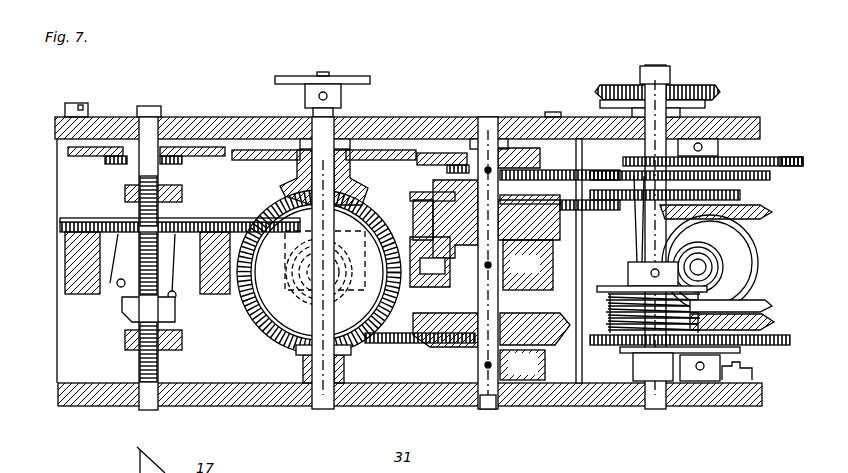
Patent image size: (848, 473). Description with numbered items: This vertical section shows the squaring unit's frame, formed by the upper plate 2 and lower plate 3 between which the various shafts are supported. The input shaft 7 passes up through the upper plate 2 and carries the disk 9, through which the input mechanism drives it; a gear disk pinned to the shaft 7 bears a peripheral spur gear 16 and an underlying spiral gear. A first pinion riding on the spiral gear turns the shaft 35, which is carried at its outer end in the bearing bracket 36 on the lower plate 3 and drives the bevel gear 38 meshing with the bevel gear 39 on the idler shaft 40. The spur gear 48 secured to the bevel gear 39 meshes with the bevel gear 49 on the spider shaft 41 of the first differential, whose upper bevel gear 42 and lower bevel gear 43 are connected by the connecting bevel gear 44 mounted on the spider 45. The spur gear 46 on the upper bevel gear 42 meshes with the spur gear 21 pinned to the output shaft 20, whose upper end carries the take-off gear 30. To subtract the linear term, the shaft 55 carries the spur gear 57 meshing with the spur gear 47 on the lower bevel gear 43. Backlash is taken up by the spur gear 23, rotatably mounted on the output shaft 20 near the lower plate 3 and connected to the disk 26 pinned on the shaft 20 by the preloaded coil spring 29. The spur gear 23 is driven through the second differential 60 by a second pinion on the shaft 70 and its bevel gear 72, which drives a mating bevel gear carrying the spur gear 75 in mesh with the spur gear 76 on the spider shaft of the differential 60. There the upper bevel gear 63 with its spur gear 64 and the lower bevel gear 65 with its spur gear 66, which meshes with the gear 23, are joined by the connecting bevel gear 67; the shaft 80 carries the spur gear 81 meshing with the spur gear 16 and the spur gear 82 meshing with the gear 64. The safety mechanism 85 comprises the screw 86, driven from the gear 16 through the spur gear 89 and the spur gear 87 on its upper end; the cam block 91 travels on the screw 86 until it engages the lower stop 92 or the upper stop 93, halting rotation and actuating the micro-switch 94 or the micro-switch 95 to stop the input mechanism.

The upper plate 2 is at (217, 118).
The lower plate 3 is at (60, 400).
The input shaft 7 is at (334, 110).
The disk 9 is at (360, 80).
The spur gear 16 is at (60, 228).
The output shaft 20 is at (664, 230).
The spur gear 21 is at (740, 196).
The spur gear 23 is at (735, 345).
The disk 26 is at (710, 289).
The coil spring 29 is at (720, 308).
The take-off gear 30 is at (712, 90).
The shaft 35 is at (300, 272).
The bearing bracket 36 is at (286, 374).
The bevel gear 38 is at (262, 340).
The bevel gear 39 is at (285, 196).
The idler shaft 40 is at (316, 406).
The spider shaft 41 is at (486, 150).
The upper bevel gear 42 is at (446, 157).
The lower bevel gear 43 is at (522, 365).
The connecting bevel gear 44 is at (340, 286).
The spider 45 is at (535, 292).
The spur gear 46 is at (425, 195).
The spur gear 47 is at (462, 385).
The spur gear 48 is at (365, 150).
The bevel gear 49 is at (505, 120).
The shaft 55 is at (455, 117).
The spur gear 57 is at (422, 343).
The second differential 60 is at (768, 254).
The upper bevel gear 63 is at (772, 212).
The spur gear 64 is at (770, 176).
The lower bevel gear 65 is at (774, 322).
The spur gear 66 is at (790, 345).
The connecting bevel gear 67 is at (752, 236).
The shaft 70 is at (608, 310).
The bevel gear 72 is at (638, 242).
The spur gear 75 is at (803, 157).
The spur gear 76 is at (765, 157).
The shaft 80 is at (62, 220).
The spur gear 81 is at (630, 264).
The spur gear 82 is at (612, 160).
The safety mechanism 85 is at (90, 197).
The screw 86 is at (139, 366).
The spur gear 87 is at (100, 156).
The spur gear 89 is at (136, 150).
The cam block 91 is at (122, 305).
The stop 92 is at (176, 346).
The stop 93 is at (182, 195).
The micro-switch 94 is at (212, 296).
The micro-switch 95 is at (65, 262).